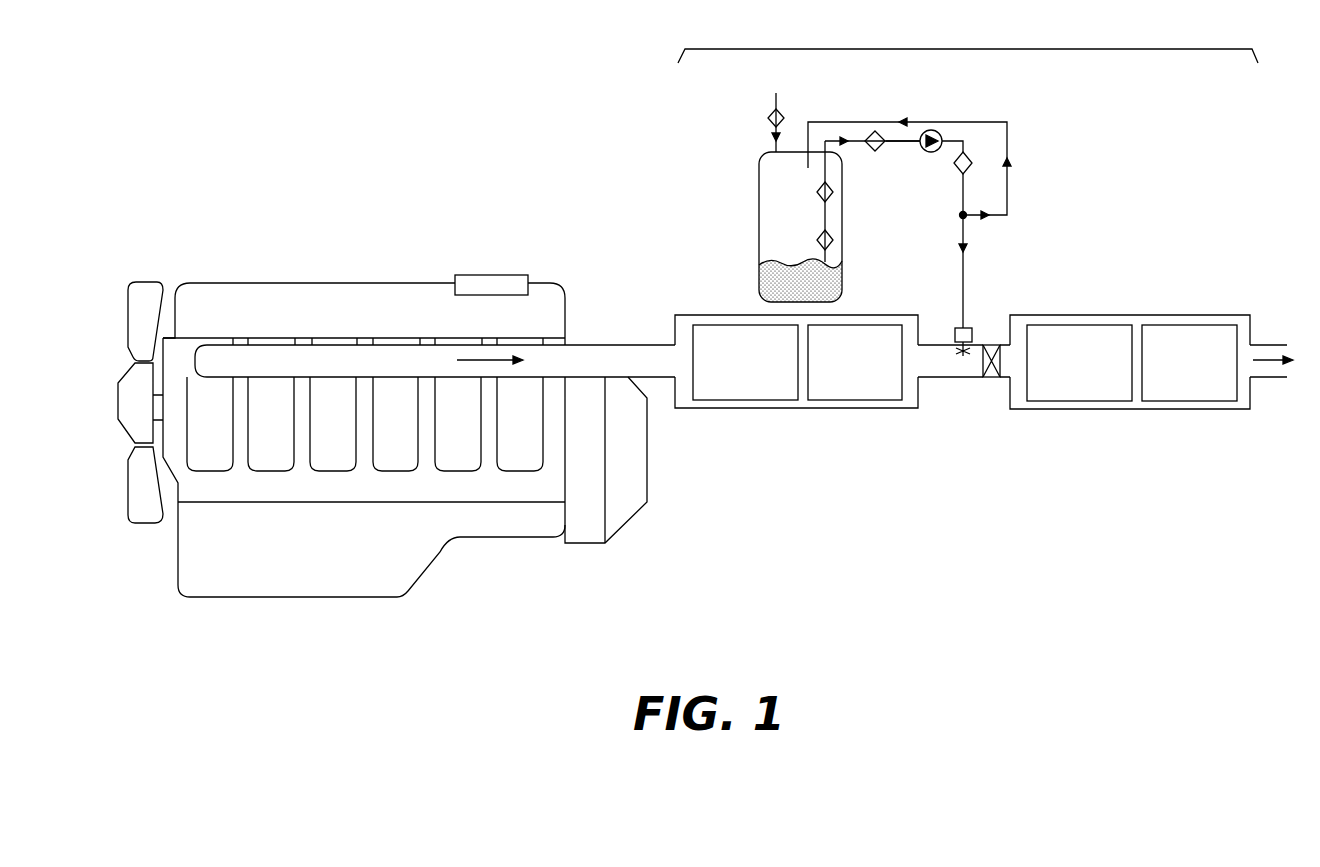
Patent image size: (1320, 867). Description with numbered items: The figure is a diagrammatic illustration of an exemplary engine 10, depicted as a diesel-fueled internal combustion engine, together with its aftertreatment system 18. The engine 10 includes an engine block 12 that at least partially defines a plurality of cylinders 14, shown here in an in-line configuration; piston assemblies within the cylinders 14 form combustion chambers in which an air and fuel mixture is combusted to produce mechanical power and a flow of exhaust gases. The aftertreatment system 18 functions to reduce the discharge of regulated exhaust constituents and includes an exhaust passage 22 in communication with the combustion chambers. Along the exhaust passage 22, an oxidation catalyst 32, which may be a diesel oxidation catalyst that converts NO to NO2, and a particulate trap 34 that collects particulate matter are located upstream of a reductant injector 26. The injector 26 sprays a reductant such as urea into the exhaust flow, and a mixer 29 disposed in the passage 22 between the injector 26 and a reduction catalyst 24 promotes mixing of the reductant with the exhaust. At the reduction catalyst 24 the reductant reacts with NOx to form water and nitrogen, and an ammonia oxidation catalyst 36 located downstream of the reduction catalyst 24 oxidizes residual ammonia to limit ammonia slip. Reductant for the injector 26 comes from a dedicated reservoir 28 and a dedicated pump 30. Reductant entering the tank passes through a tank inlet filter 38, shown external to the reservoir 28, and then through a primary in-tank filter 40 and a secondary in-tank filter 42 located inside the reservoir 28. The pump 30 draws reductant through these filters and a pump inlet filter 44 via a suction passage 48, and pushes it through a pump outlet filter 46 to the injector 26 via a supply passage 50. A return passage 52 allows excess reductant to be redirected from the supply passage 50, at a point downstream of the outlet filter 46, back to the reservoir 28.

The engine 10 is at (338, 111).
The engine block 12 is at (216, 494).
The cylinders 14 is at (530, 444).
The aftertreatment system 18 is at (1003, 49).
The exhaust passage 22 is at (628, 371).
The reduction catalyst 24 is at (1070, 380).
The reductant injector 26 is at (975, 333).
The reservoir 28 is at (774, 214).
The mixer 29 is at (997, 377).
The pump 30 is at (930, 130).
The oxidation catalyst 32 is at (736, 380).
The particulate trap 34 is at (845, 380).
The ammonia oxidation catalyst 36 is at (1180, 380).
The tank inlet filter 38 is at (767, 116).
The primary in-tank filter 40 is at (836, 243).
The secondary in-tank filter 42 is at (834, 196).
The pump inlet filter 44 is at (878, 151).
The pump outlet filter 46 is at (971, 170).
The suction passage 48 is at (906, 146).
The supply passage 50 is at (961, 283).
The return passage 52 is at (1009, 181).